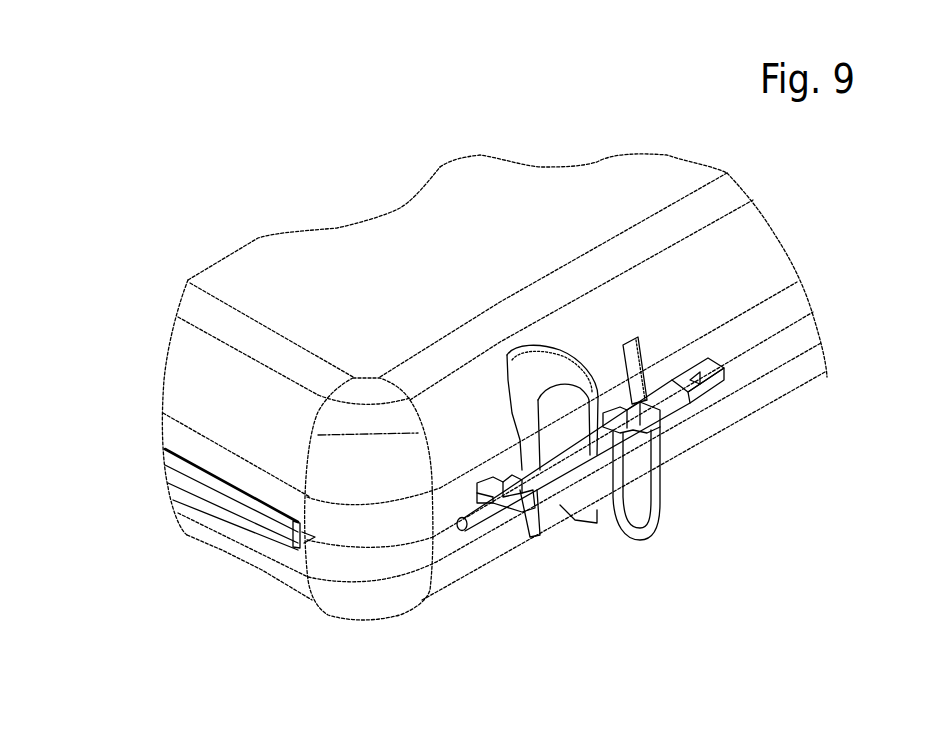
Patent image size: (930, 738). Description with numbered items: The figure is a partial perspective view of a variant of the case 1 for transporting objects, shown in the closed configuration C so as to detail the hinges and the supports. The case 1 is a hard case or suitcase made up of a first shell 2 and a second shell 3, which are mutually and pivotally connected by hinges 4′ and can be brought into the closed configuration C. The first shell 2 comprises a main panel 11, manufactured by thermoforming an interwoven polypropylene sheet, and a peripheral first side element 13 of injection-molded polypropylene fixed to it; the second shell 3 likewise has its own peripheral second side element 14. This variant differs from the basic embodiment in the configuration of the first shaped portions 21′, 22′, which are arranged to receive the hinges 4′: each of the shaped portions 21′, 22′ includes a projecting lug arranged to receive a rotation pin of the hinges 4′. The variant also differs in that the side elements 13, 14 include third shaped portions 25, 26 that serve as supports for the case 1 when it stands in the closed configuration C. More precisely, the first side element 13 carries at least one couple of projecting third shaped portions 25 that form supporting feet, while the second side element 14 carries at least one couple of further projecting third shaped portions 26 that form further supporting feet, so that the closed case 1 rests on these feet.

The case 1 is at (127, 111).
The first shell 2 is at (110, 333).
The second shell 3 is at (107, 517).
The closed configuration C is at (107, 643).
The main panel 11 is at (350, 280).
The first side element 13 is at (677, 280).
The second side element 14 is at (740, 415).
The third shaped portions 25 is at (528, 367).
The further third shaped portions 26 is at (632, 505).
The hinges 4′ is at (460, 525).
The first shaped portion 21′ is at (493, 513).
The first shaped portion 22′ is at (558, 475).